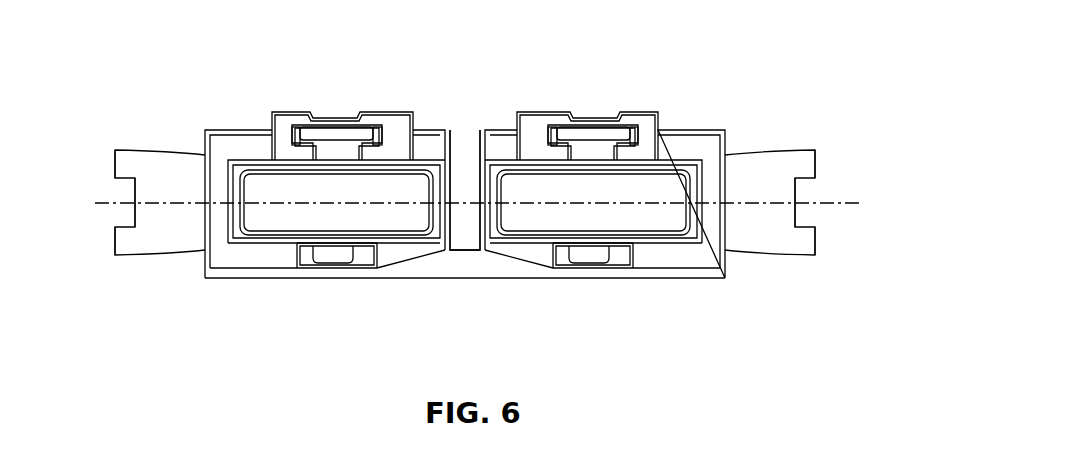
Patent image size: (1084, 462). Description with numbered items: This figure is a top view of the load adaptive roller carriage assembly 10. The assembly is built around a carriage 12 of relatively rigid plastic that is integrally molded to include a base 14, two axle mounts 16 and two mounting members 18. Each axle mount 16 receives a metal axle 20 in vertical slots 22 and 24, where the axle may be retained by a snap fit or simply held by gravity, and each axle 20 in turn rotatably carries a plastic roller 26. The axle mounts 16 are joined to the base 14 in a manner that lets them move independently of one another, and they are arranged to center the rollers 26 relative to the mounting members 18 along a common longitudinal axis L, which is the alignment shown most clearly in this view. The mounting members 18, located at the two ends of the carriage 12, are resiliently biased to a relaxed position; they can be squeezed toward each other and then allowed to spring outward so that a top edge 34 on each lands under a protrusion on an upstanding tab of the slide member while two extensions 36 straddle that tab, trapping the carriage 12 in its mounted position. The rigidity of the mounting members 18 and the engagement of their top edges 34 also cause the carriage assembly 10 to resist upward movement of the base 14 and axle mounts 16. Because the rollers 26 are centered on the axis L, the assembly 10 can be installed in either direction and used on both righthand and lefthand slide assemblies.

The load adaptive roller carriage assembly 10 is at (720, 72).
The carriage 12 is at (450, 281).
The base 14 is at (498, 138).
The axle mount 16 is at (392, 122).
The mounting member 18 is at (172, 149).
The axle 20 is at (338, 128).
The vertical slot 22 is at (291, 133).
The vertical slot 24 is at (291, 252).
The roller 26 is at (248, 223).
The top edge 34 is at (138, 212).
The extension 36 is at (115, 165).
The longitudinal axis L is at (833, 203).